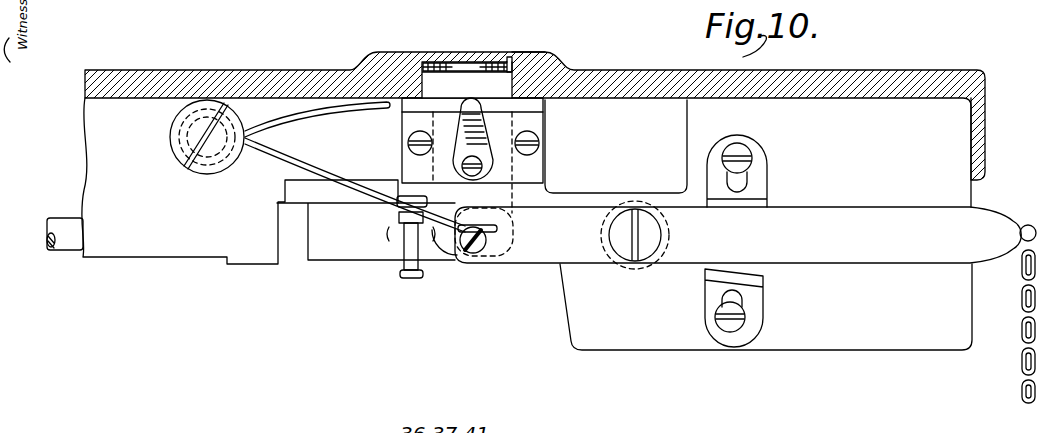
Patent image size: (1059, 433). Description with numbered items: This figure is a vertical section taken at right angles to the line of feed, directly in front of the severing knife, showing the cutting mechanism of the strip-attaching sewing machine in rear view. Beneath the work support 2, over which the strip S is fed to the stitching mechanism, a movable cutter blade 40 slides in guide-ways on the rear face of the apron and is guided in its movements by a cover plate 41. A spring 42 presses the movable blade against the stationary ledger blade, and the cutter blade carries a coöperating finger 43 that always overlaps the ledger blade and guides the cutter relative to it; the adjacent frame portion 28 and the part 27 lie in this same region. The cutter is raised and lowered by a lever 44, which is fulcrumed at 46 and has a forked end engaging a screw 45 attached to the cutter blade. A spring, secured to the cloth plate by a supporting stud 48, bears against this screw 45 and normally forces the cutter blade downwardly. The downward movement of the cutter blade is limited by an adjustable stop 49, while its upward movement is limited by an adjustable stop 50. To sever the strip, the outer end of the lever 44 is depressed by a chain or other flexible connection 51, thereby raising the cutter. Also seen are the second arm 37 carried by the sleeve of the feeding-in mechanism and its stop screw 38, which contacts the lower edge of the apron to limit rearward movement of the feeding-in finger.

The work support 2 is at (889, 76).
The strip S is at (467, 64).
The coöperating finger 43 is at (508, 57).
The frame portion 28 is at (548, 57).
The movable cutter blade 40 is at (467, 80).
The cover plate 41 is at (537, 118).
The spring 42 is at (468, 106).
The supporting stud 48 is at (180, 134).
The spring 27 is at (321, 170).
The second arm 37 is at (394, 217).
The stop screw 38 is at (407, 261).
The screw 45 is at (481, 254).
The lever 44 is at (828, 216).
The fulcrum 46 is at (623, 244).
The adjustable stop 49 is at (760, 173).
The adjustable stop 50 is at (752, 303).
The chain or other flexible connection 51 is at (1022, 313).